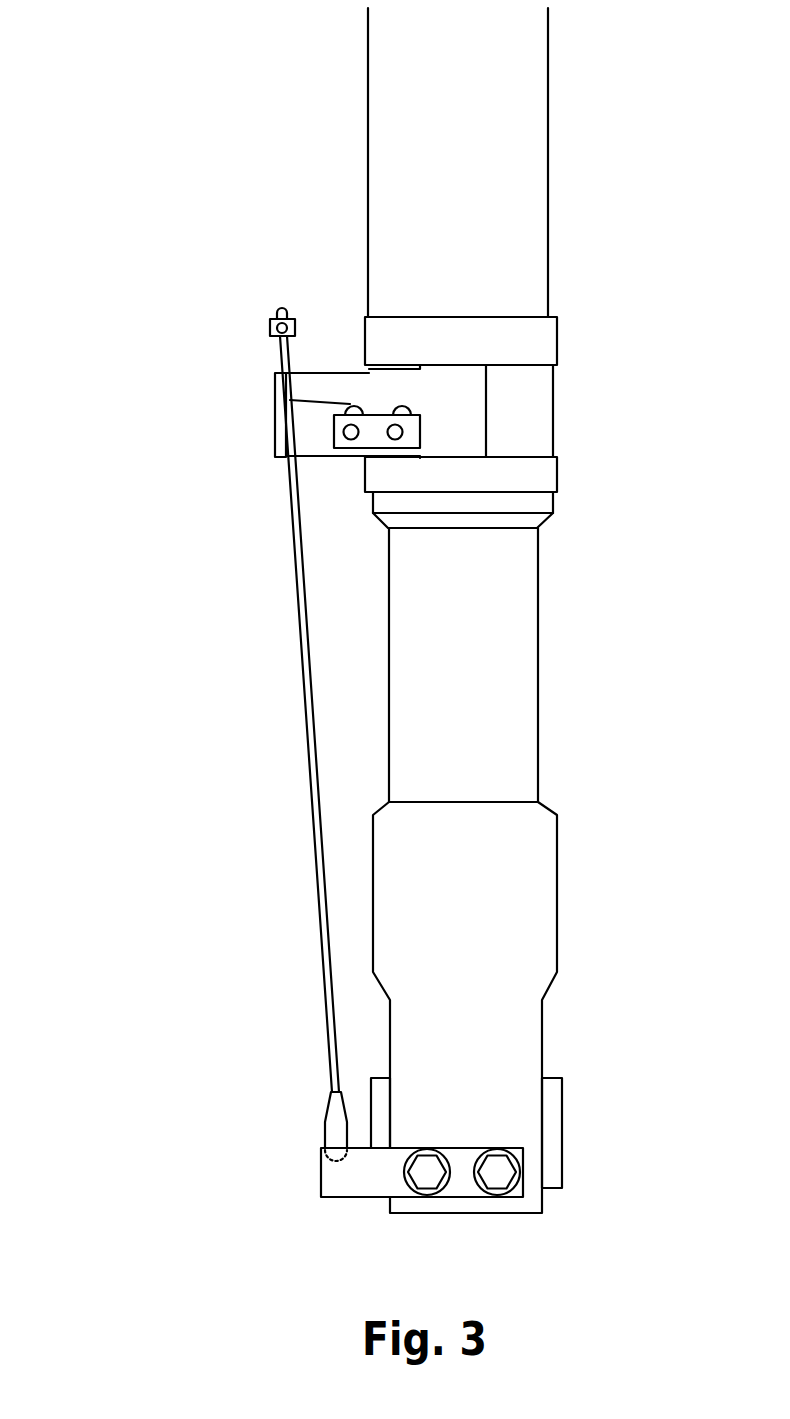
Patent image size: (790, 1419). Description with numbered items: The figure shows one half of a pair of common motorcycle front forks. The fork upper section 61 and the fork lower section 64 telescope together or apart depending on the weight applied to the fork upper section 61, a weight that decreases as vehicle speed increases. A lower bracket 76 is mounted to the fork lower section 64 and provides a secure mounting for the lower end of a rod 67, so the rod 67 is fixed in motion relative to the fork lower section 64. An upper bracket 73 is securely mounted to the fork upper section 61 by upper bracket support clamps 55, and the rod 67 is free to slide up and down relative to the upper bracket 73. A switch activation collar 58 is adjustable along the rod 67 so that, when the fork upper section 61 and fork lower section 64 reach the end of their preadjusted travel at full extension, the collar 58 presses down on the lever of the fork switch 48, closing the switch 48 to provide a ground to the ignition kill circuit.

The fork upper section 61 is at (513, 153).
The upper bracket support clamps 55 is at (538, 475).
The upper bracket 73 is at (275, 413).
The fork switch 48 is at (373, 427).
The switch activation collar 58 is at (268, 326).
The rod 67 is at (307, 716).
The fork lower section 64 is at (517, 988).
The lower bracket 76 is at (347, 1185).